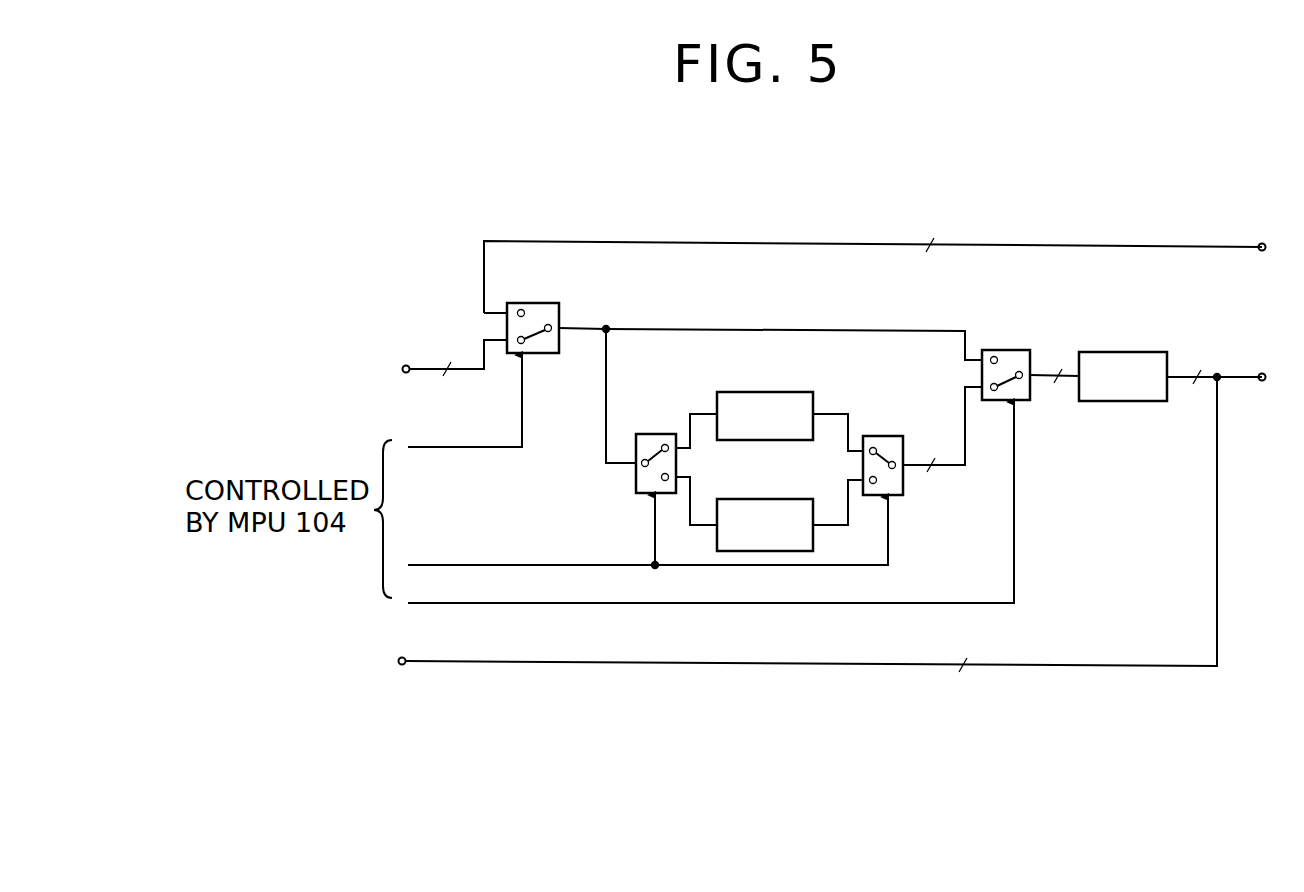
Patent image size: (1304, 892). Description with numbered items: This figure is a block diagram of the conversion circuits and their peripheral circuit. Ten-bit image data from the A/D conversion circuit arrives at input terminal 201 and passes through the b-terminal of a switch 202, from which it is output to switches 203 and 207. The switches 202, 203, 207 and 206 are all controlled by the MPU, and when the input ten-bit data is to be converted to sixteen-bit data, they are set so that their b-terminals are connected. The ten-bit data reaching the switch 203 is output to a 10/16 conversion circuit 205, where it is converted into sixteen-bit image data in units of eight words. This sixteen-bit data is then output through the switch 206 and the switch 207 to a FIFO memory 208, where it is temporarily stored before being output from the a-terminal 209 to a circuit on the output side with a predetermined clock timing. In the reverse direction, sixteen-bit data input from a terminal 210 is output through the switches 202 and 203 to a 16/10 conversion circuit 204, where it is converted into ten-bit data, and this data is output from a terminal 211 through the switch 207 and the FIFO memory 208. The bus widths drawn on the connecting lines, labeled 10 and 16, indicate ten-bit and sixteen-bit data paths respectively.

The input terminal (10-bit) 201 is at (402, 372).
The switch 202 is at (553, 302).
The switch 203 is at (654, 432).
The 16/10 conversion circuit 204 is at (783, 392).
The 10/16 conversion circuit 205 is at (759, 499).
The switch 206 is at (895, 434).
The switch 207 is at (1022, 349).
The FIFO memory 208 is at (1126, 352).
The a-terminal 209 is at (1262, 373).
The terminal 210 is at (1263, 243).
The terminal 211 is at (402, 666).
The 10-bit bus width 10 is at (698, 535).
The 16-bit bus width 16 is at (1057, 373).